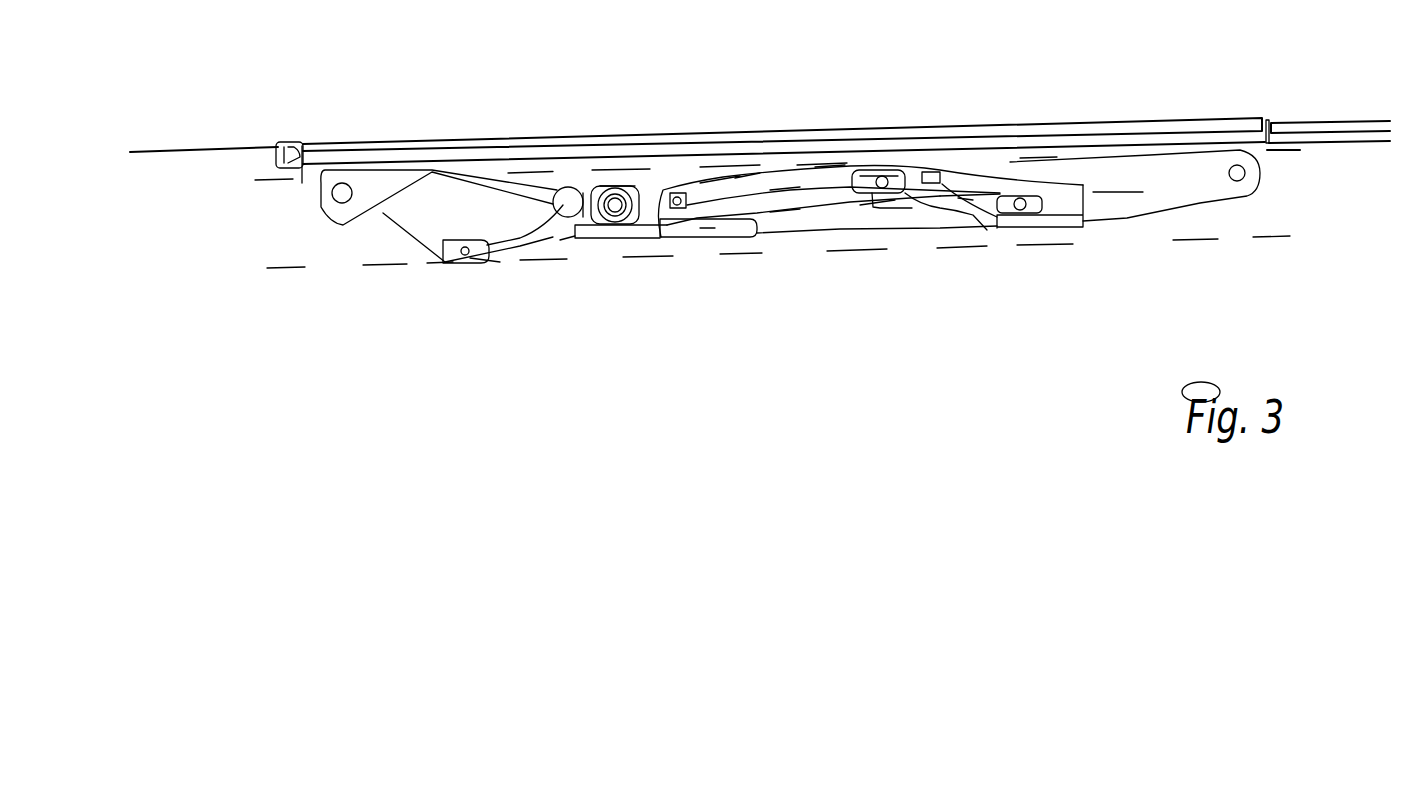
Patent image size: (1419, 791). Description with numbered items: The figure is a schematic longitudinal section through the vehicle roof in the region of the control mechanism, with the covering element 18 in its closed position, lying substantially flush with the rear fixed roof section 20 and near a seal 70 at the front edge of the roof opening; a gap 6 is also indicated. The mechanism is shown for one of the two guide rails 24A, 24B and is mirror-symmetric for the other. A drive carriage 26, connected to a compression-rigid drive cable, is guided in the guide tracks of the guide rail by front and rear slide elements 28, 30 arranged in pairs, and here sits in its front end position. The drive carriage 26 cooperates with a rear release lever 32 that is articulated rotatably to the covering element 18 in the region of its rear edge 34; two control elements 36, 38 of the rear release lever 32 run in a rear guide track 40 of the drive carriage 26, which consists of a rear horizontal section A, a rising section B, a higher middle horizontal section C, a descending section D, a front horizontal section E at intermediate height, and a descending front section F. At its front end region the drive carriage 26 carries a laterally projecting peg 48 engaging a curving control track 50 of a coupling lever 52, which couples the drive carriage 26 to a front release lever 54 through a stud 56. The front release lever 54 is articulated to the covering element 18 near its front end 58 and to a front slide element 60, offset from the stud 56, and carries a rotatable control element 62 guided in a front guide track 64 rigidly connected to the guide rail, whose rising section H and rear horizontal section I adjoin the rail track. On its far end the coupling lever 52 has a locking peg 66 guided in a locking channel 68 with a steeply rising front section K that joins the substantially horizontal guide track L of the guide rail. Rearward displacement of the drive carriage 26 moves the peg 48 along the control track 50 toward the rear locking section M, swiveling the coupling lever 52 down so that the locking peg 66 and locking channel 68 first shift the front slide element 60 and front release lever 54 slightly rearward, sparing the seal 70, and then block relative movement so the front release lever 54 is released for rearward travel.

The gap 6 is at (495, 262).
The covering element 18 is at (465, 142).
The rear fixed roof section 20 is at (1318, 117).
The guide rail 24A is at (1253, 237).
The guide rail 24B is at (1005, 245).
The drive carriage 26 is at (912, 208).
The front slide element 28 is at (727, 228).
The rear slide element 30 is at (1068, 228).
The rear release lever 32 is at (1138, 167).
The rear edge 34 is at (1268, 120).
The control element 36 is at (873, 197).
The control element 38 is at (1042, 200).
The rear guide track 40 is at (716, 183).
The peg 48 is at (676, 193).
The control track 50 is at (823, 200).
The coupling lever 52 is at (789, 210).
The front release lever 54 is at (407, 210).
The stud 56 is at (574, 186).
The front end 58 is at (303, 165).
The front slide element 60 is at (625, 241).
The control element 62 is at (453, 250).
The front guide track 64 is at (557, 233).
The locking peg 66 is at (933, 175).
The locking channel 68 is at (987, 213).
The seal 70 is at (290, 140).
The rear horizontal section A is at (1062, 186).
The rising section B is at (973, 190).
The middle horizontal section C is at (830, 172).
The descending section D is at (782, 175).
The front horizontal section E is at (745, 178).
The front section F is at (707, 219).
The rising section H is at (563, 243).
The rear horizontal section I is at (636, 185).
The front section K is at (957, 175).
The horizontal guide track L is at (970, 228).
The rear locking section M is at (887, 170).